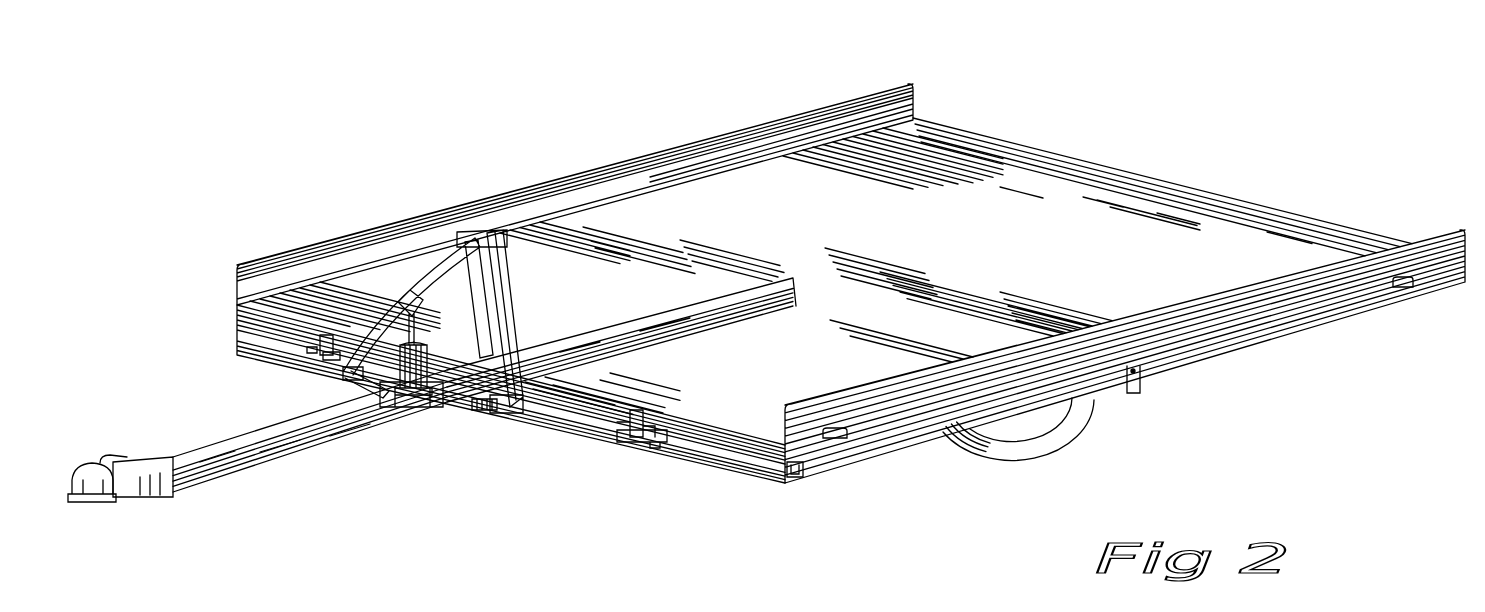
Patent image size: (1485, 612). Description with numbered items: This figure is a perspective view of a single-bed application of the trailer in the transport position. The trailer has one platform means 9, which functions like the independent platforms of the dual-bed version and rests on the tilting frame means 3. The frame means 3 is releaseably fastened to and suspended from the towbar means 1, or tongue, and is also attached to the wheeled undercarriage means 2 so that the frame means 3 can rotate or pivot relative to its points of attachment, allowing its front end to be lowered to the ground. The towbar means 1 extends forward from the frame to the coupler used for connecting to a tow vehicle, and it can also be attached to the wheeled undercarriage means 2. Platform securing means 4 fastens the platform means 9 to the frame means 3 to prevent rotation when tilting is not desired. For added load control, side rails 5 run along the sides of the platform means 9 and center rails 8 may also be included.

The towbar means 1 is at (300, 447).
The wheeled undercarriage means 2 is at (1047, 443).
The frame means 3 is at (877, 447).
The platform securing means 4 is at (648, 443).
The side rails 5 is at (915, 100).
The center rails 8 is at (682, 326).
The platform means 9 is at (1260, 232).